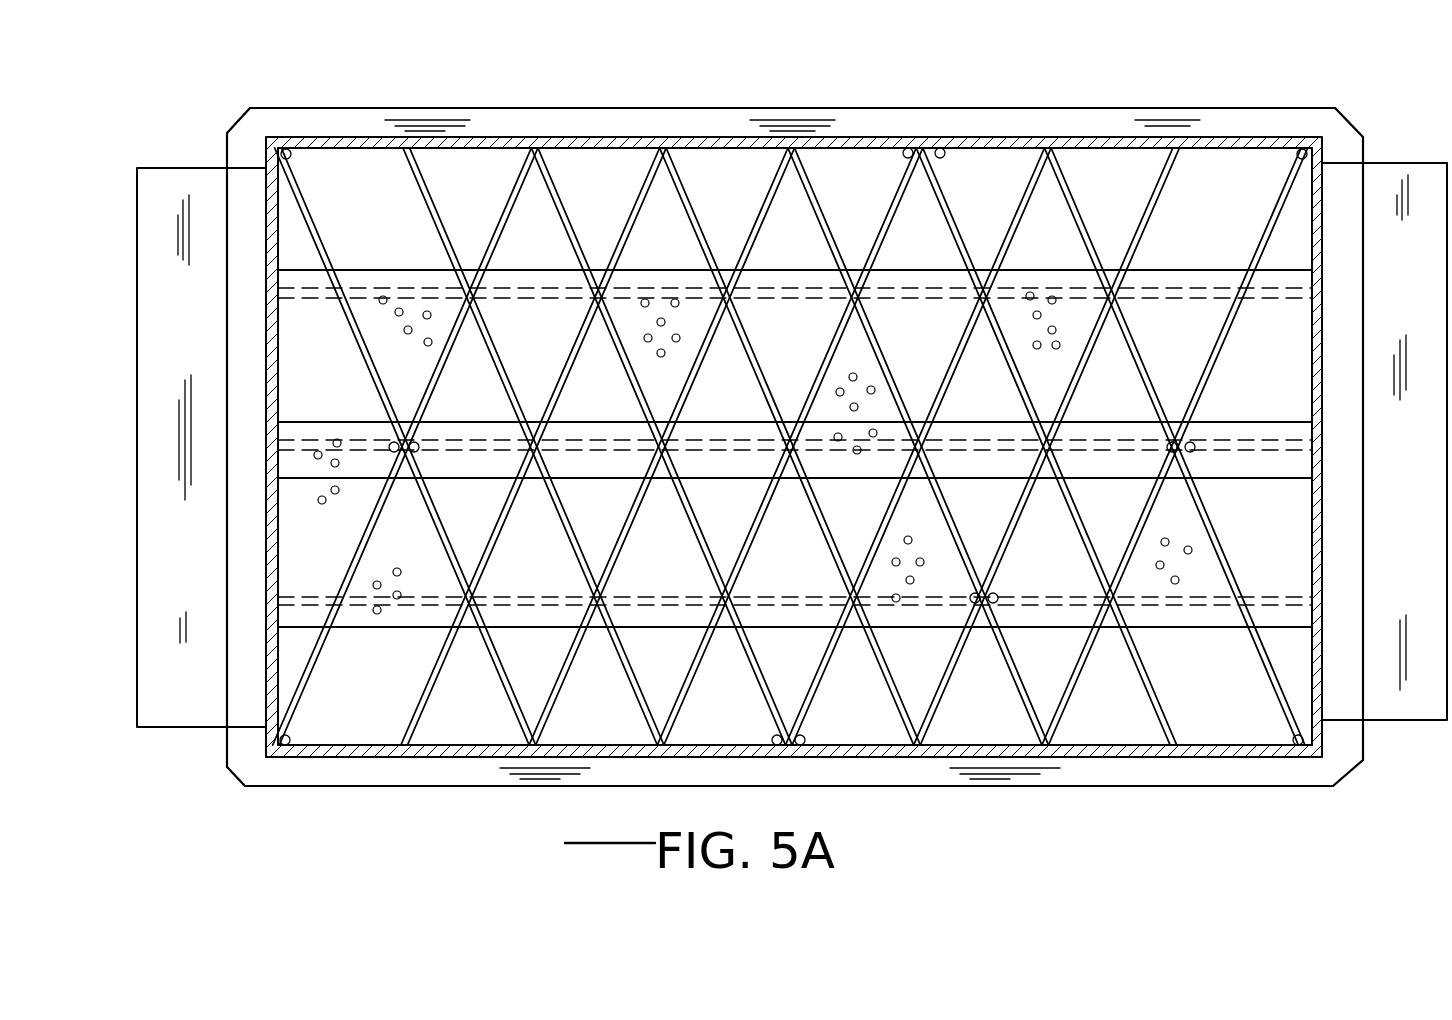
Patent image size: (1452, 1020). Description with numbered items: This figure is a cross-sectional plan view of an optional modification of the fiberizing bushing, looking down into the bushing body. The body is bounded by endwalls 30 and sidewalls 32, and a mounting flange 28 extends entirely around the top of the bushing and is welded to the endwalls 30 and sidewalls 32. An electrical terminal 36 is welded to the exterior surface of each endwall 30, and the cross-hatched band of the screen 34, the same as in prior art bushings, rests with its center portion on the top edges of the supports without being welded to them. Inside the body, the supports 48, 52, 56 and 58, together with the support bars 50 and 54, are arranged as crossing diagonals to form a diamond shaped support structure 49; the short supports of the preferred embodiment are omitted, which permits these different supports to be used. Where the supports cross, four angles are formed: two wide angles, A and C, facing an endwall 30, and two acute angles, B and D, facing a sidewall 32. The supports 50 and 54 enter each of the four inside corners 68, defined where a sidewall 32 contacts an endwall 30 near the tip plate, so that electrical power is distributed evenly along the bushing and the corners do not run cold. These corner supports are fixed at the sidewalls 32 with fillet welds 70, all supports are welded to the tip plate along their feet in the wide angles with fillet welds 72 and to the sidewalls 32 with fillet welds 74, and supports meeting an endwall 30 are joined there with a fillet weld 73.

The mounting flange 28 is at (262, 125).
The endwall 30 is at (268, 690).
The sidewall 32 is at (447, 760).
The screen 34 is at (1247, 452).
The electrical terminal 36 is at (165, 718).
The support 48 is at (313, 225).
The diamond shaped support structure 49 is at (950, 688).
The support bar 50 is at (432, 200).
The support 52 is at (552, 185).
The support bar 54 is at (648, 212).
The support 56 is at (1072, 192).
The support 58 is at (1282, 195).
The inside corner 68 is at (290, 150).
The fillet weld 70 is at (300, 152).
The fillet weld 72 is at (398, 440).
The fillet weld 73 is at (1384, 441).
The fillet weld 74 is at (945, 150).